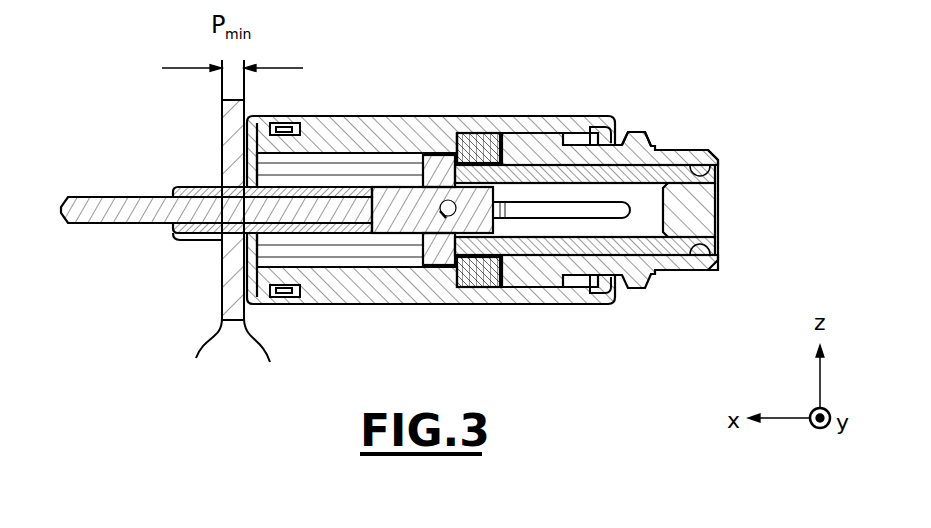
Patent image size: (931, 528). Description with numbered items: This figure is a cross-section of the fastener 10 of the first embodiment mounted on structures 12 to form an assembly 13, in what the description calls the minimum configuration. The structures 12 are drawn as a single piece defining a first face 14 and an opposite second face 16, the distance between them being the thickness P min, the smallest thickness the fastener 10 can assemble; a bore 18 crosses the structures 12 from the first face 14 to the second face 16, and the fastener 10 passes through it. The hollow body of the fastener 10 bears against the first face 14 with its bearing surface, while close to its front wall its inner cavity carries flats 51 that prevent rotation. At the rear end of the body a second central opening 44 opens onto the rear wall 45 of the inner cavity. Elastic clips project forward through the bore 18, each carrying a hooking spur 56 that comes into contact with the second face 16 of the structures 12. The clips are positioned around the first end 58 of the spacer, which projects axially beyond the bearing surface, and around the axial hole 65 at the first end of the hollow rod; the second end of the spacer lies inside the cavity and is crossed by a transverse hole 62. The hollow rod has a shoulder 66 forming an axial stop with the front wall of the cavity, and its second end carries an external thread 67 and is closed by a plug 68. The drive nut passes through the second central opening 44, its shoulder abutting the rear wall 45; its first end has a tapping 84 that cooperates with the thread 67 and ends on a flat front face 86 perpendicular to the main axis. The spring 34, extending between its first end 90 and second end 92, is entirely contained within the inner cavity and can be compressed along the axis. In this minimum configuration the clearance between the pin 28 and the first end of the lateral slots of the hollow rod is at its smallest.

The fastener 10 is at (592, 340).
The structures 12 is at (233, 342).
The assembly 13 is at (158, 246).
The first face 14 is at (269, 356).
The second face 16 is at (196, 353).
The bore 18 is at (237, 237).
The pin 28 is at (450, 200).
The spring 34 is at (478, 275).
The second central opening 44 is at (623, 134).
The rear wall 45 is at (594, 124).
The flats 51 is at (337, 262).
The hooking spur 56 is at (200, 190).
The first end of the spacer 58 is at (68, 213).
The transverse hole 62 is at (450, 225).
The axial hole 65 is at (403, 197).
The shoulder 66 is at (420, 168).
The thread 67 is at (680, 165).
The plug 68 is at (708, 215).
The tapping 84 is at (715, 165).
The front face 86 is at (492, 140).
The first end of the spring 90 is at (453, 150).
The second end of the spring 92 is at (507, 282).